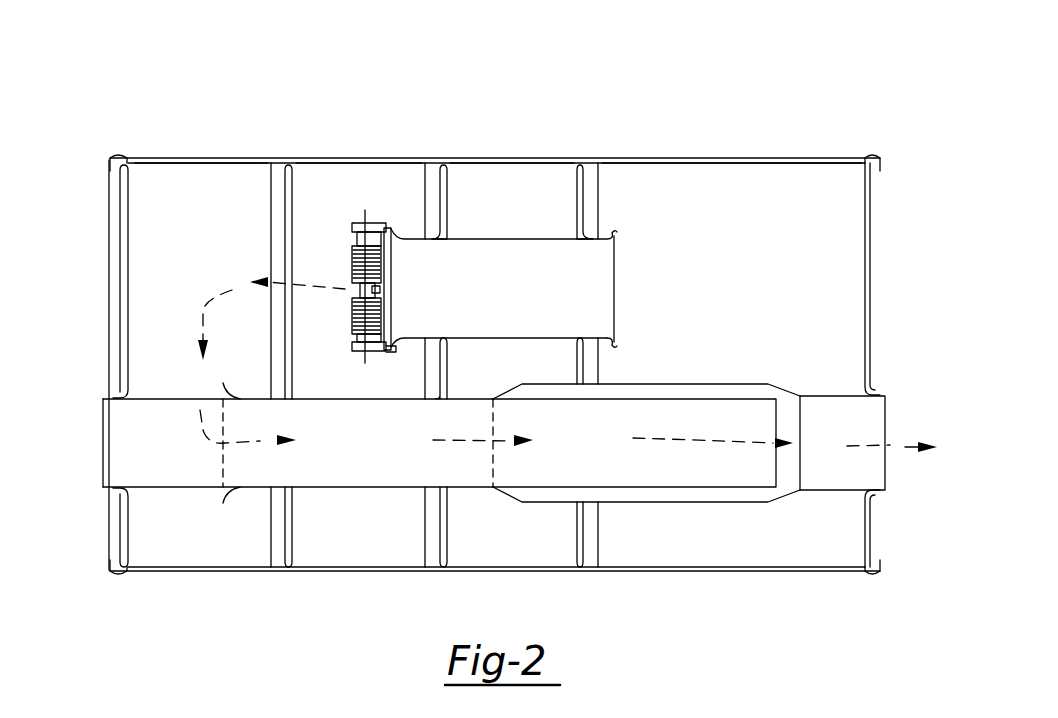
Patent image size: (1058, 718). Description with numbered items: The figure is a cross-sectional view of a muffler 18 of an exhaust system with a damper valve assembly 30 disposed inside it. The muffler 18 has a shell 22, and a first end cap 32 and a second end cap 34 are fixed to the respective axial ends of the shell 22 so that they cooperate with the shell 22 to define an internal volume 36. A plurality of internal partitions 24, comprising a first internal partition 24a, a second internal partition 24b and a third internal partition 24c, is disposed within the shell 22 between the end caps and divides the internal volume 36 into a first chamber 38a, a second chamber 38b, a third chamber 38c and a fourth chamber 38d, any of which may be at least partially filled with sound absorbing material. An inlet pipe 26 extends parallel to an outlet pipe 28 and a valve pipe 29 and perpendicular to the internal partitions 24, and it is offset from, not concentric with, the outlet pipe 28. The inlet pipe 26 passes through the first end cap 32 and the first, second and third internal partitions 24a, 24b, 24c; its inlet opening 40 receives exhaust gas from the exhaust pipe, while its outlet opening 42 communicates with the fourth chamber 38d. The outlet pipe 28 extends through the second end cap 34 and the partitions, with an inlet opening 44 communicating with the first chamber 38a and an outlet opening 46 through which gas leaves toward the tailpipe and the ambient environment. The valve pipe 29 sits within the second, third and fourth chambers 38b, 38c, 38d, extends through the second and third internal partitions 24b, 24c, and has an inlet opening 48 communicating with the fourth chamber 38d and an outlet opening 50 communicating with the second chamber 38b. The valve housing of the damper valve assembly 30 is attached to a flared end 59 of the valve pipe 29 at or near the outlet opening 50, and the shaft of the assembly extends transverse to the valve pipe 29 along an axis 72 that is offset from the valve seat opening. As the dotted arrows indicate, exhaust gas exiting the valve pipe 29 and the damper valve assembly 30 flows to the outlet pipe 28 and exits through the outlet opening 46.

The muffler 18 is at (660, 73).
The shell 22 is at (838, 157).
The plurality of internal partitions 24 is at (616, 362).
The first internal partition 24a is at (283, 200).
The second internal partition 24b is at (449, 195).
The third internal partition 24c is at (578, 195).
The inlet pipe 26 is at (168, 399).
The outlet pipe 28 is at (826, 385).
The valve pipe 29 is at (507, 340).
The damper valve assembly 30 is at (341, 365).
The first end cap 32 is at (117, 200).
The second end cap 34 is at (870, 208).
The internal volume 36 is at (698, 553).
The first chamber 38a is at (163, 180).
The second chamber 38b is at (375, 180).
The third chamber 38c is at (525, 180).
The fourth chamber 38d is at (727, 180).
The inlet opening 40 is at (103, 415).
The outlet opening 42 is at (755, 462).
The inlet opening 44 is at (224, 383).
The outlet opening 46 is at (878, 420).
The inlet opening 48 is at (618, 284).
The outlet opening 50 is at (394, 240).
The flared end 59 is at (390, 362).
The axis 72 is at (345, 215).